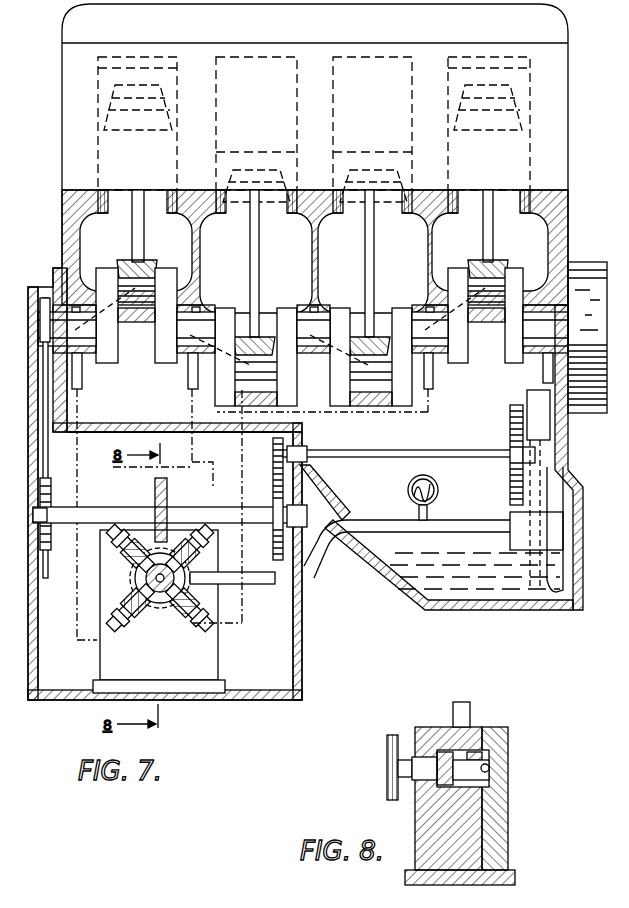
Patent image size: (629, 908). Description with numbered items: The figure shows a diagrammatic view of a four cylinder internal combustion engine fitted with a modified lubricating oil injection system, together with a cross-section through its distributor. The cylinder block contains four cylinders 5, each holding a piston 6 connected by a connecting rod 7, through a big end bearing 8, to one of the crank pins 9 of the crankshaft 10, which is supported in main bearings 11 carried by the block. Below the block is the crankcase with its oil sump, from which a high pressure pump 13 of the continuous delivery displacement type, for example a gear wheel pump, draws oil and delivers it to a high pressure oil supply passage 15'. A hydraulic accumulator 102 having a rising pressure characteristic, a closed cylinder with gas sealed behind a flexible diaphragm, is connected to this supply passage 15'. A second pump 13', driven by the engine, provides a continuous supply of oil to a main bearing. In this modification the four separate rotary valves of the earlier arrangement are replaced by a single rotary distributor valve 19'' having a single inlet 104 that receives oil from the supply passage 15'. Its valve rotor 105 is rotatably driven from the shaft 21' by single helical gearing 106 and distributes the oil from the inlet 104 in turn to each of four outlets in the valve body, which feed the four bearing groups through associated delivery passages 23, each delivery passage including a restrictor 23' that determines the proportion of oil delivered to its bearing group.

In FIG. 7, the cylinders 5 is at (98, 79).
In FIG. 7, the piston 6 is at (522, 80).
In FIG. 7, the connecting rod 7 is at (144, 230).
In FIG. 7, the big end bearing 8 is at (136, 324).
In FIG. 7, the crank pins 9 is at (191, 385).
In FIG. 7, the crankshaft 10 is at (525, 352).
In FIG. 7, the main bearings 11 is at (176, 376).
In FIG. 7, the high pressure pump 13 is at (556, 516).
In FIG. 7, the second pump 13' is at (551, 447).
In FIG. 7, the high pressure oil supply passage 15' is at (407, 549).
In FIG. 7, the rotary distributor valve 19'' is at (160, 603).
In FIG. 7, the shaft 21' is at (170, 507).
In FIG. 7, the delivery passages 23 is at (266, 505).
In FIG. 8, the delivery passages 23 is at (478, 714).
In FIG. 7, the restrictor 23' is at (157, 589).
In FIG. 7, the hydraulic accumulator 102 is at (438, 490).
In FIG. 8, the inlet 104 is at (490, 768).
In FIG. 7, the valve rotor 105 is at (140, 586).
In FIG. 8, the valve rotor 105 is at (470, 788).
In FIG. 7, the single helical gearing 106 is at (170, 510).